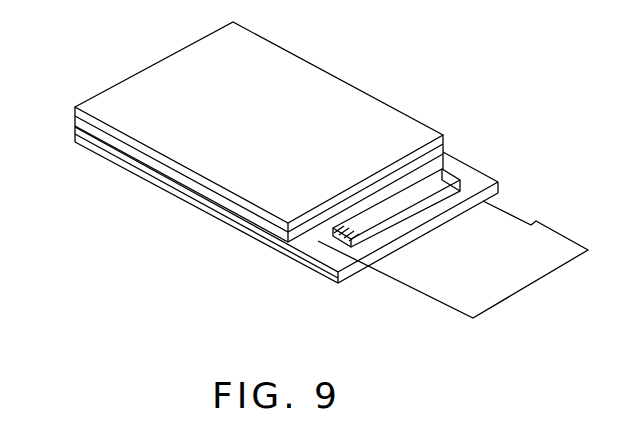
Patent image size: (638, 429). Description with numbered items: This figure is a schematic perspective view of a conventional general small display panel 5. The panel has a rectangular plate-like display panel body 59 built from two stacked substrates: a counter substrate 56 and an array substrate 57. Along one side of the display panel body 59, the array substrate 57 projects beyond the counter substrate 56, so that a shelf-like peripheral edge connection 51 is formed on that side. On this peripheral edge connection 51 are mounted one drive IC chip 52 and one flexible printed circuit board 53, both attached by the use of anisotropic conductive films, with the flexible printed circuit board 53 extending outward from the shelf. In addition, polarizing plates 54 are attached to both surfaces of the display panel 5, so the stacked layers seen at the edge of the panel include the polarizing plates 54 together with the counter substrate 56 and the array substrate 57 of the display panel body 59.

The display panel 5 is at (474, 97).
The peripheral edge connection 51 is at (468, 178).
The drive IC chip 52 is at (337, 237).
The flexible printed circuit board 53 is at (420, 275).
The polarizing plate 54 is at (238, 232).
The counter substrate 56 is at (133, 168).
The array substrate 57 is at (167, 183).
The display panel body 59 is at (143, 228).